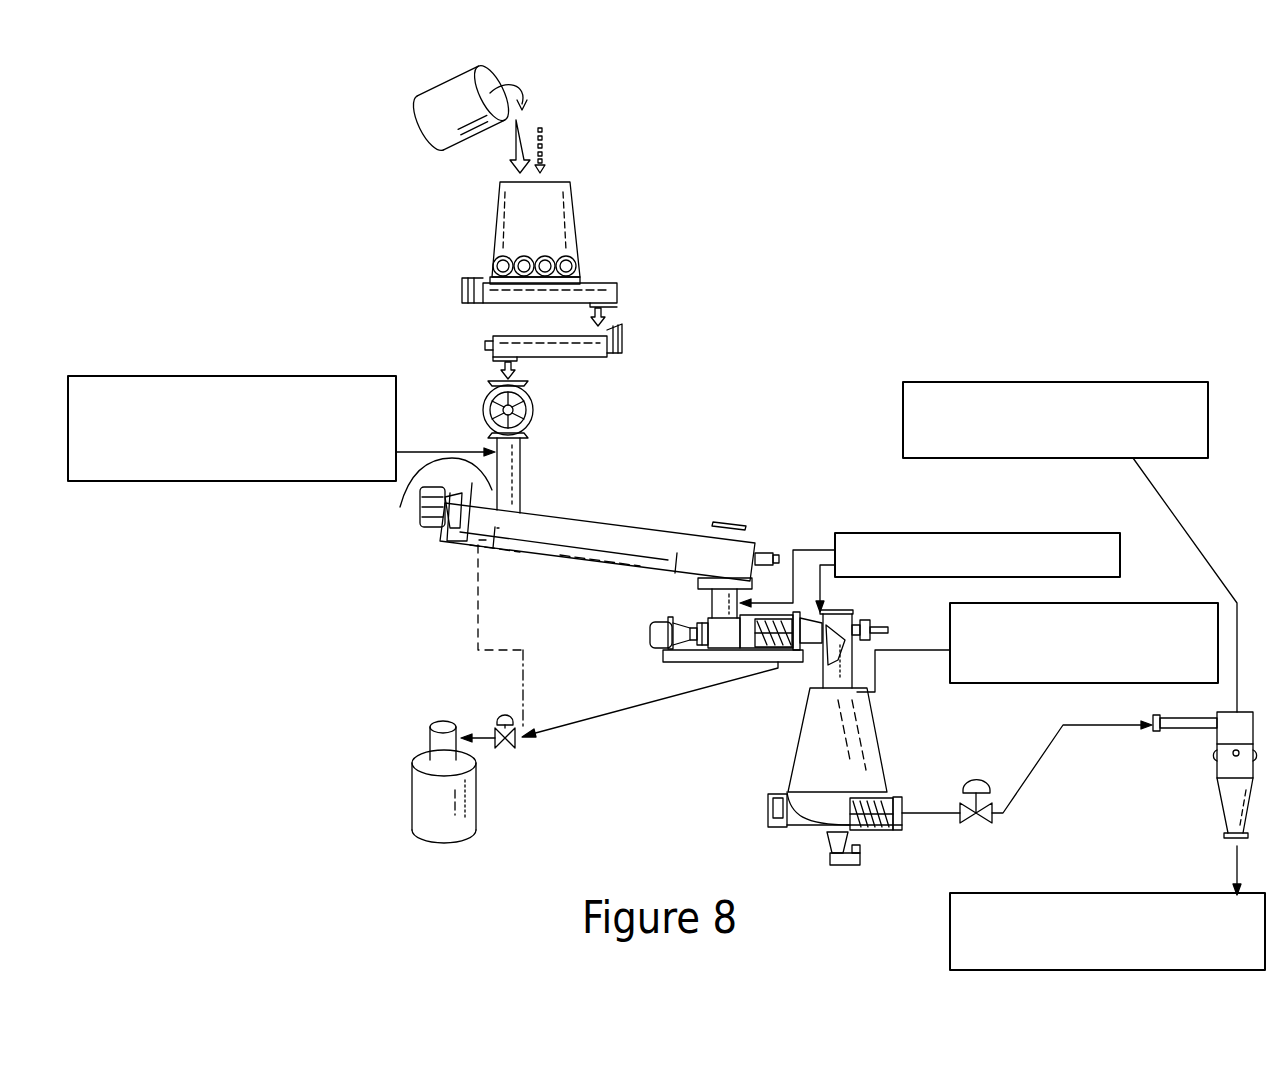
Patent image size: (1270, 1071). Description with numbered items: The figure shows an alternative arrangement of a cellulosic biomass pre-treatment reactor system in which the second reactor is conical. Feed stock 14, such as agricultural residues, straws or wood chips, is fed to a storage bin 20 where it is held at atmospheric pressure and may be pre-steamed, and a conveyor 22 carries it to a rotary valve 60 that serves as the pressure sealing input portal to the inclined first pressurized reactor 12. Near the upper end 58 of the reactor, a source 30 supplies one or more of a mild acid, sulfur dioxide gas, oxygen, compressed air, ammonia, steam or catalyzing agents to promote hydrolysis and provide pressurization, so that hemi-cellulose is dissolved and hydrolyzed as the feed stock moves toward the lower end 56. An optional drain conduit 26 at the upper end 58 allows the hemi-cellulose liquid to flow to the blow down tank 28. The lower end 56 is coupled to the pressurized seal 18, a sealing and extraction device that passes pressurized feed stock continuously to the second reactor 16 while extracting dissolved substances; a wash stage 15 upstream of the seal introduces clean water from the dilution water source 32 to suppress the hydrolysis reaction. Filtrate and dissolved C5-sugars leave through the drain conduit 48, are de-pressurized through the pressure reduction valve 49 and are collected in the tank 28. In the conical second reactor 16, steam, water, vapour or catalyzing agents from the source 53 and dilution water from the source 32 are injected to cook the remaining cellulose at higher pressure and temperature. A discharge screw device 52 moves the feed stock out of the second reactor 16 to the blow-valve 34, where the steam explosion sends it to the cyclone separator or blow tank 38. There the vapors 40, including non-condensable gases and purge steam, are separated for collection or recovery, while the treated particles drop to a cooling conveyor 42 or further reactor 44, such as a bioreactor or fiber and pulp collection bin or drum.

The feed stock 14 is at (438, 86).
The storage bin 20 is at (498, 211).
The conveyor 22 is at (628, 277).
The rotary valve 60 is at (532, 396).
The source of mild acid, SO2, oxygen, compressed air, ammonia, steam or catalyzing a 30 is at (247, 482).
The upper end of the first reactor 58 is at (418, 483).
The first pressurized reactor 12 is at (585, 510).
The lower end of the first reactor 56 is at (755, 533).
The wash stage 15 is at (708, 597).
The pressurized seal (sealing and extraction device) 18 is at (665, 617).
The dilution water source 32 is at (899, 532).
The NCG and purge steam/gas vapors 40 is at (986, 382).
The source of steam, water, vapour or catalyzing agents 53 is at (1149, 603).
The second pressurized reactor 16 is at (873, 727).
The blow-valve 34 is at (962, 788).
The discharge device 52 is at (878, 830).
The cyclone separator or blow tank 38 is at (1215, 770).
The cooling device 42 is at (1107, 913).
The further reactor 44 is at (1142, 893).
The drain conduit 26 is at (478, 597).
The drain conduit (pipe) 48 is at (653, 707).
The pressure reduction valve 49 is at (505, 718).
The blow down tank or drum 28 is at (477, 808).